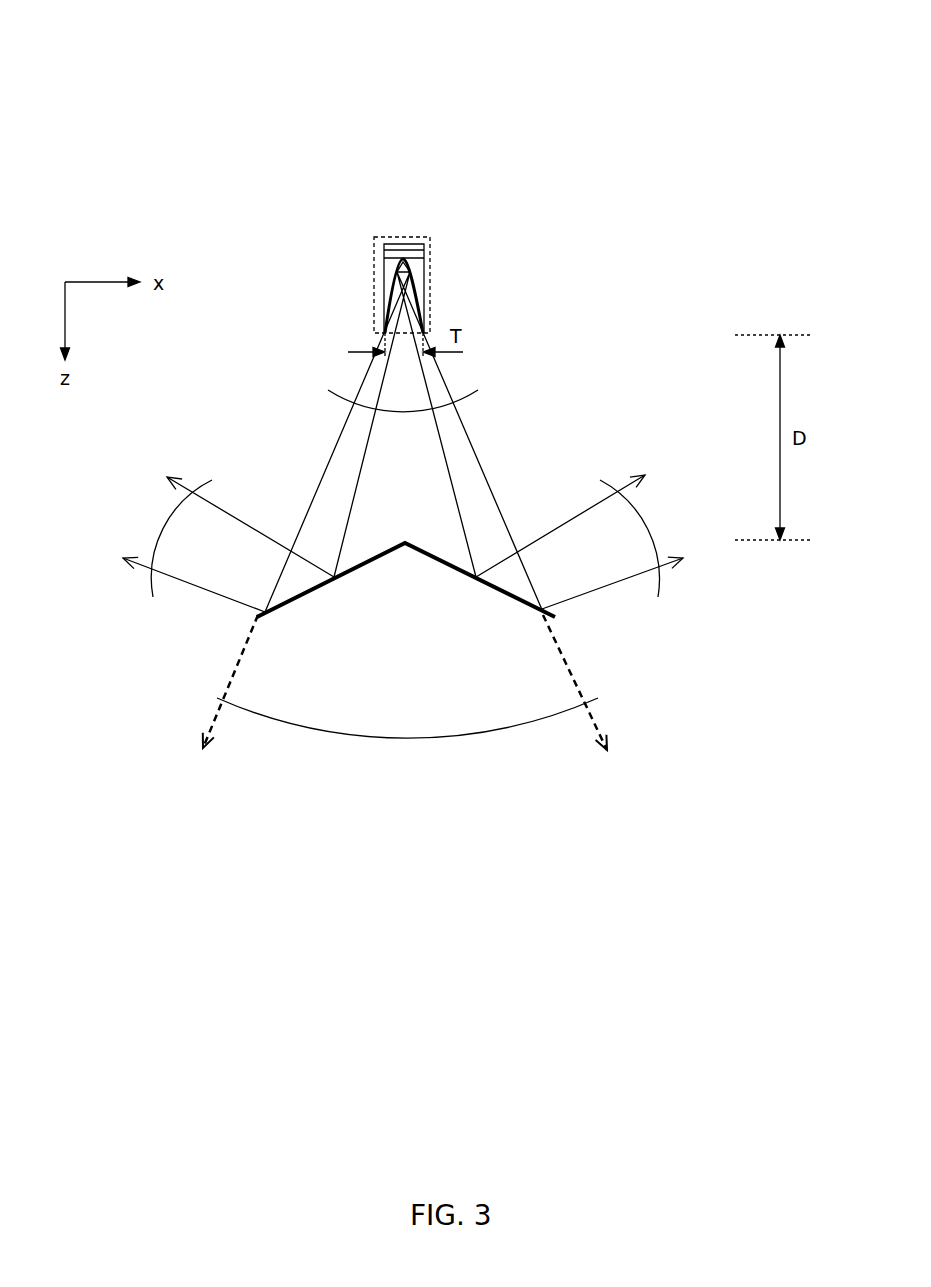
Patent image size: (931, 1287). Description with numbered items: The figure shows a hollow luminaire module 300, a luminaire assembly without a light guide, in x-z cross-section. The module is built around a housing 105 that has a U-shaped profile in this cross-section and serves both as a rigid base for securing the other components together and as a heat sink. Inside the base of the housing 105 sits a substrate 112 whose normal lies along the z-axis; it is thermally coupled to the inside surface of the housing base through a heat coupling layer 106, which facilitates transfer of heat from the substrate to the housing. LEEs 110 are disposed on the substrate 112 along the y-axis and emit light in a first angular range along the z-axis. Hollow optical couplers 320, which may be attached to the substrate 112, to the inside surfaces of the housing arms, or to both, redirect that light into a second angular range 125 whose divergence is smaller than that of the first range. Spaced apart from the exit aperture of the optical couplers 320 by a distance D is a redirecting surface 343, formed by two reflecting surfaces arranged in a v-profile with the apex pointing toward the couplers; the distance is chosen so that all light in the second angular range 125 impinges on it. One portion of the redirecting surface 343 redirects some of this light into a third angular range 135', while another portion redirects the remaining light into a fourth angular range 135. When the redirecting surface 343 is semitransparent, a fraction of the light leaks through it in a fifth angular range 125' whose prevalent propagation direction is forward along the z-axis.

The hollow luminaire module 300 is at (517, 72).
The housing 105 is at (432, 292).
The substrate 112 is at (385, 257).
The heat coupling layer 106 is at (400, 250).
The optical coupler 320 is at (390, 300).
The LEE 110 is at (405, 268).
The second angular range 125 is at (412, 442).
The redirecting surface 343 is at (425, 597).
The fourth angular range 135 is at (597, 542).
The third angular range 135' is at (205, 544).
The fifth angular range 125' is at (405, 704).